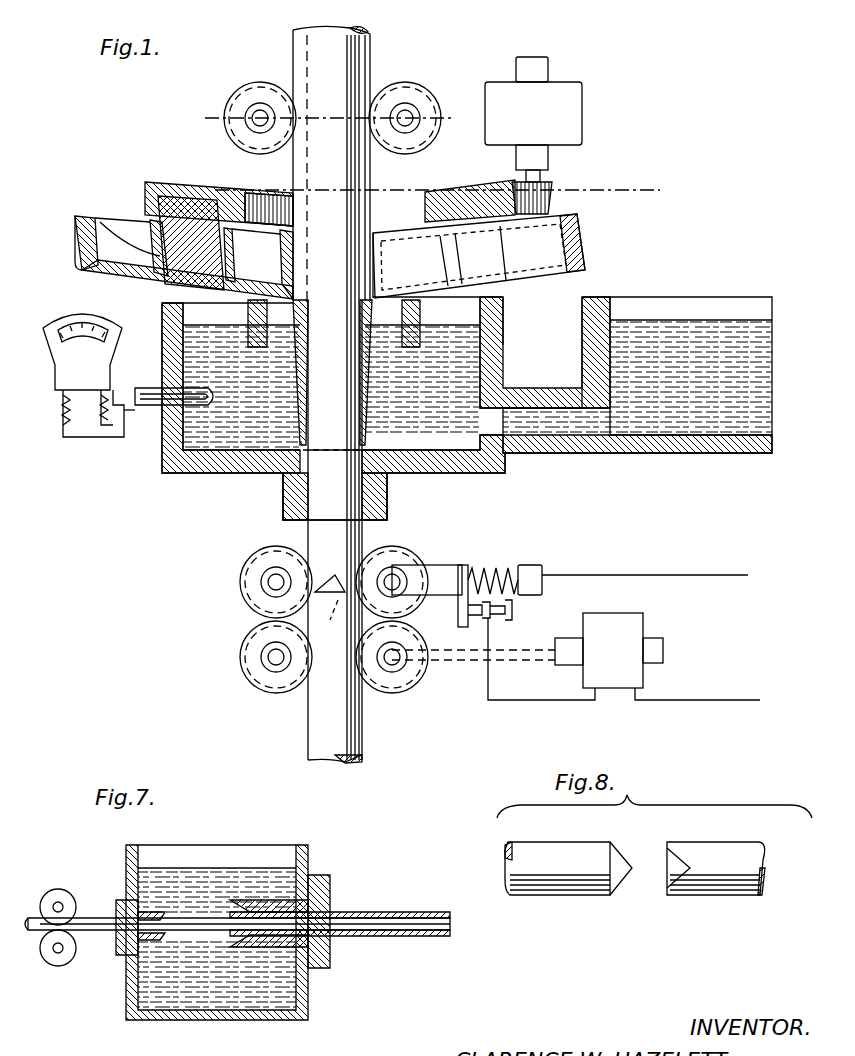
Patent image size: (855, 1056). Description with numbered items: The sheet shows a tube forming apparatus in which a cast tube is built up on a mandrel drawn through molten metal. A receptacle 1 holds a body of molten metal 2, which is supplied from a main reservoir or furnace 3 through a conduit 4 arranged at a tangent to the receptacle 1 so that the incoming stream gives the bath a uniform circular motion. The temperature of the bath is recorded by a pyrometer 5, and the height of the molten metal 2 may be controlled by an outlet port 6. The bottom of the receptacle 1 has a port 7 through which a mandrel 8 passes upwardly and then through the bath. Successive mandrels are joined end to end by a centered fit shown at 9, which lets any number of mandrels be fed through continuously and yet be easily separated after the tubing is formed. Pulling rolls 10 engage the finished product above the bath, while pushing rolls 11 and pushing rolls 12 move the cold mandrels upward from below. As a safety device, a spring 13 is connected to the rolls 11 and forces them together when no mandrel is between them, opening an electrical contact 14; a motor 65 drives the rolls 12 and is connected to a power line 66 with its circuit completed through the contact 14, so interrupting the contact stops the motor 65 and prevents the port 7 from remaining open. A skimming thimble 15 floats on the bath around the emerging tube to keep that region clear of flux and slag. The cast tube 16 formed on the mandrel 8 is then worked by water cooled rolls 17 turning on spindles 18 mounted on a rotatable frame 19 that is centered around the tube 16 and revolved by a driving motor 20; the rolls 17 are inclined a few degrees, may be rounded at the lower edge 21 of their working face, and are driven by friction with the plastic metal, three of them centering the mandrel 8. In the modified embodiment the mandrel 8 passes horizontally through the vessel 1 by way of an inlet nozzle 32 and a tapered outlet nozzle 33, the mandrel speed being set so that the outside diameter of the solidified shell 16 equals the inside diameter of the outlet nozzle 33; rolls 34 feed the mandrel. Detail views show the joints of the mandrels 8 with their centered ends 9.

In FIG. 1, the receptacle 1 is at (508, 330).
In FIG. 7, the receptacle 1 is at (268, 855).
In FIG. 1, the molten metal 2 is at (331, 387).
In FIG. 1, the main reservoir or furnace 3 is at (637, 377).
In FIG. 1, the conduit 4 is at (545, 438).
In FIG. 1, the pyrometer 5 is at (150, 405).
In FIG. 1, the outlet port 6 is at (155, 330).
In FIG. 1, the port 7 is at (283, 500).
In FIG. 1, the mandrel 8 is at (345, 538).
In FIG. 7, the mandrel 8 is at (375, 912).
In FIG. 8, the mandrel 8 is at (523, 845).
In FIG. 1, the centered joint 9 is at (330, 610).
In FIG. 8, the centered joint 9 is at (630, 862).
In FIG. 1, the pulling rolls 10 is at (245, 92).
In FIG. 1, the pushing rolls 11 is at (255, 555).
In FIG. 1, the pushing rolls 12 is at (258, 640).
In FIG. 1, the spring 13 is at (500, 560).
In FIG. 1, the electrical contact 14 is at (472, 612).
In FIG. 1, the skimming thimble 15 is at (135, 300).
In FIG. 1, the cast tube 16 is at (380, 210).
In FIG. 7, the cast tube 16 is at (432, 912).
In FIG. 1, the water cooled rolls 17 is at (585, 258).
In FIG. 1, the spindles 18 is at (115, 255).
In FIG. 1, the rotatable frame 19 is at (232, 190).
In FIG. 1, the driving motor 20 is at (575, 88).
In FIG. 1, the lower edge 21 is at (296, 310).
In FIG. 7, the inlet nozzle 32 is at (116, 900).
In FIG. 7, the outlet nozzle 33 is at (280, 955).
In FIG. 7, the feed rolls 34 is at (58, 945).
In FIG. 1, the motor 65 is at (635, 630).
In FIG. 1, the power line 66 is at (730, 620).